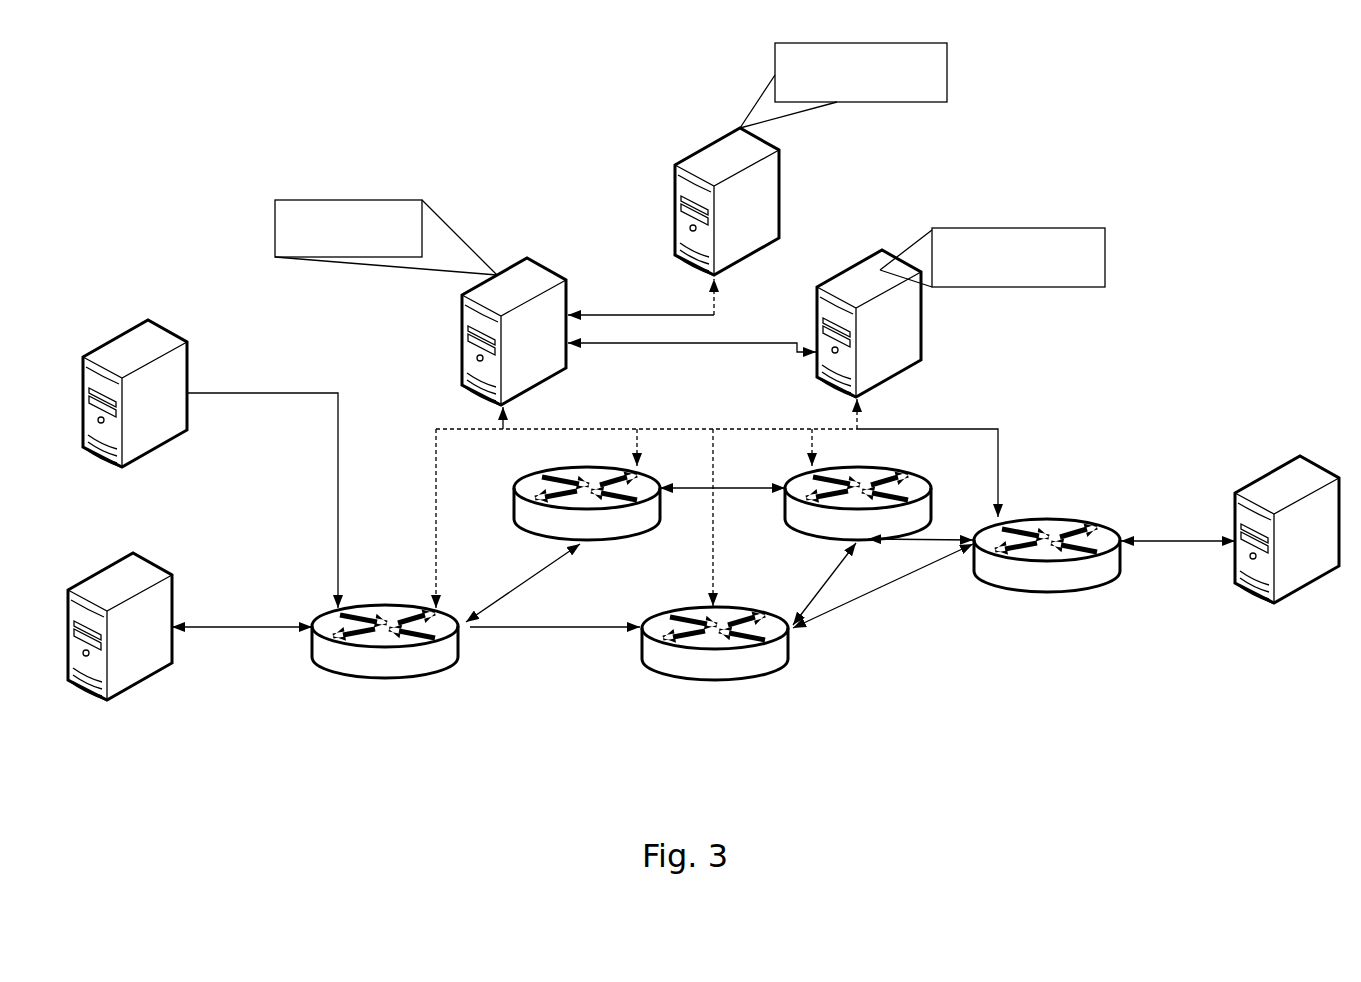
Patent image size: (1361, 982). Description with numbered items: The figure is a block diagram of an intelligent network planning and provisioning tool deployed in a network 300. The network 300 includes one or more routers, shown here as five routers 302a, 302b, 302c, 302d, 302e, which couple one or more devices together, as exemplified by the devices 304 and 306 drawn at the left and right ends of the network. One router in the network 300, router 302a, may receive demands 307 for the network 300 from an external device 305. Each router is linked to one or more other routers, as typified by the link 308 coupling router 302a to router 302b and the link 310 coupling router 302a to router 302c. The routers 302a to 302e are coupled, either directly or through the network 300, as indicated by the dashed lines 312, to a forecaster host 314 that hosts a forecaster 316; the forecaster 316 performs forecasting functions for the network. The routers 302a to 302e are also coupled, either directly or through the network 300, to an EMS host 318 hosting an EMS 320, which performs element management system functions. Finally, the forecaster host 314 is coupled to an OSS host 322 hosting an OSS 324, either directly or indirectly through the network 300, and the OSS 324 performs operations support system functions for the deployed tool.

The network 300 is at (1056, 441).
The router 302a is at (388, 678).
The router 302b is at (513, 488).
The router 302c is at (717, 679).
The router 302d is at (910, 473).
The router 302e is at (1050, 592).
The device 304 is at (132, 553).
The external device 305 is at (148, 320).
The device 306 is at (1300, 458).
The demands 307 is at (270, 392).
The link 308 is at (527, 581).
The link 310 is at (548, 629).
The dashed lines 312 is at (435, 507).
The forecaster host 314 is at (527, 258).
The forecaster 316 is at (365, 200).
The EMS host 318 is at (833, 321).
The EMS 320 is at (1105, 258).
The OSS host 322 is at (680, 197).
The OSS 324 is at (947, 73).